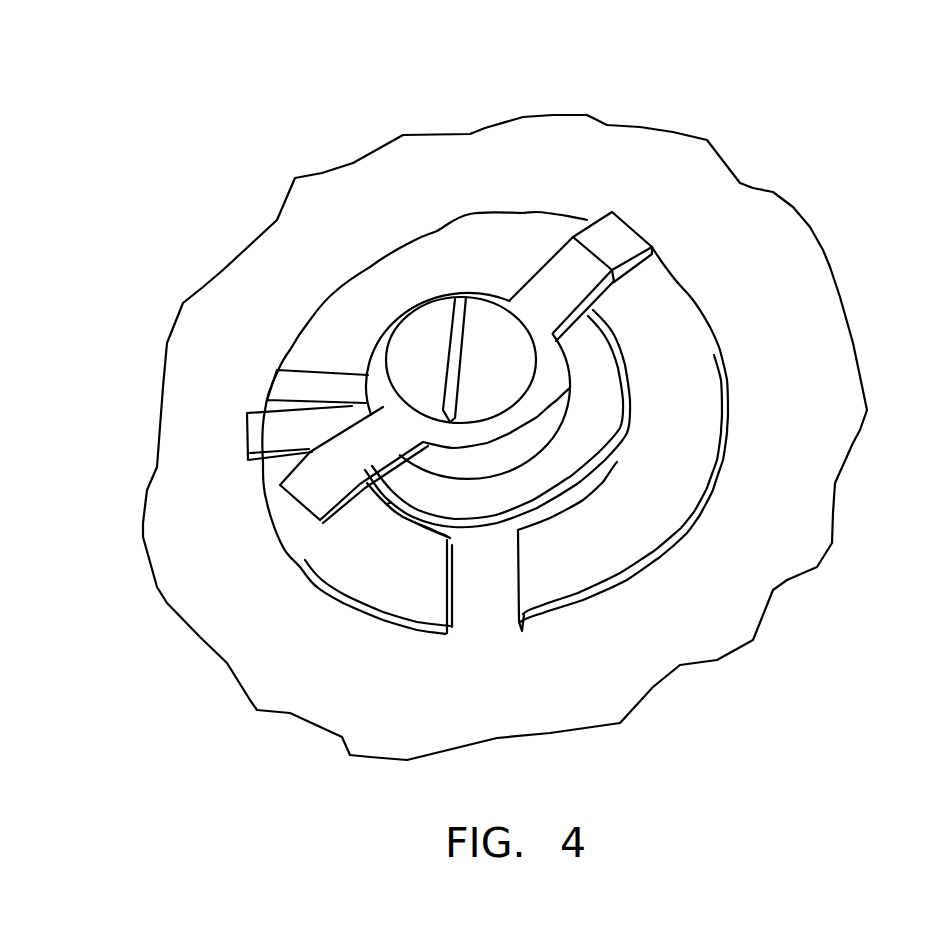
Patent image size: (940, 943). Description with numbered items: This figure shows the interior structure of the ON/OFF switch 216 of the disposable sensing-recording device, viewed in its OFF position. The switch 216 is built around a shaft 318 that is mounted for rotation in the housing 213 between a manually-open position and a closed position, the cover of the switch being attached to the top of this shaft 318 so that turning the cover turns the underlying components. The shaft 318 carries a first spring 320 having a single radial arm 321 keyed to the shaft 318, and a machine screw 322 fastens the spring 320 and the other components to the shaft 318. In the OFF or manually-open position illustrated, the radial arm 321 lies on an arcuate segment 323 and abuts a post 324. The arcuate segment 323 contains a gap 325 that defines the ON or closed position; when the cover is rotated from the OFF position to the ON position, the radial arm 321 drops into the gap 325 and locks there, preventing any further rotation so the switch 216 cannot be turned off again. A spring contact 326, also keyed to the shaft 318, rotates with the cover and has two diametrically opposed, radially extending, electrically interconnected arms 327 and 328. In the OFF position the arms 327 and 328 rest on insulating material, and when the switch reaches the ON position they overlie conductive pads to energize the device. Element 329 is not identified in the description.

The housing 213 is at (807, 320).
The ON/OFF switch 216 is at (713, 268).
The shaft 318 is at (527, 437).
The first spring 320 is at (445, 546).
The radial arm 321 is at (260, 430).
The machine screw 322 is at (488, 326).
The arcuate segment 323 is at (347, 551).
The post 324 is at (307, 383).
The gap 325 is at (500, 590).
The spring contact 326 is at (570, 270).
The arm 327 is at (610, 240).
The arm 328 is at (317, 483).
The ring 329 is at (583, 430).